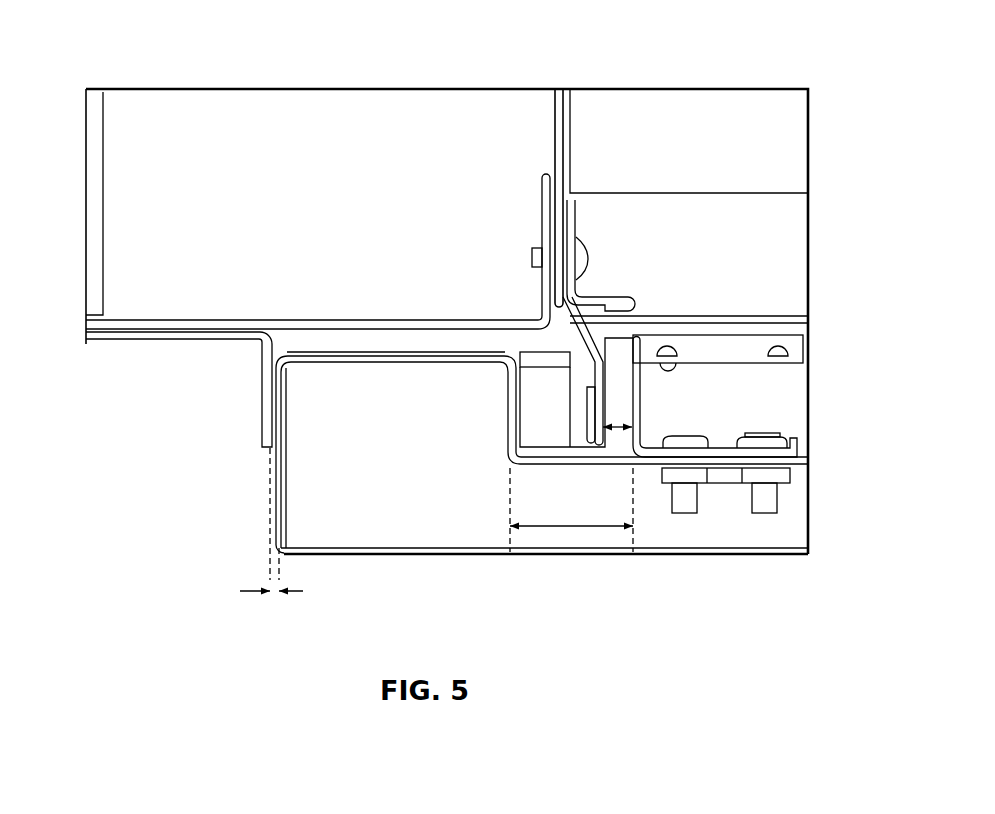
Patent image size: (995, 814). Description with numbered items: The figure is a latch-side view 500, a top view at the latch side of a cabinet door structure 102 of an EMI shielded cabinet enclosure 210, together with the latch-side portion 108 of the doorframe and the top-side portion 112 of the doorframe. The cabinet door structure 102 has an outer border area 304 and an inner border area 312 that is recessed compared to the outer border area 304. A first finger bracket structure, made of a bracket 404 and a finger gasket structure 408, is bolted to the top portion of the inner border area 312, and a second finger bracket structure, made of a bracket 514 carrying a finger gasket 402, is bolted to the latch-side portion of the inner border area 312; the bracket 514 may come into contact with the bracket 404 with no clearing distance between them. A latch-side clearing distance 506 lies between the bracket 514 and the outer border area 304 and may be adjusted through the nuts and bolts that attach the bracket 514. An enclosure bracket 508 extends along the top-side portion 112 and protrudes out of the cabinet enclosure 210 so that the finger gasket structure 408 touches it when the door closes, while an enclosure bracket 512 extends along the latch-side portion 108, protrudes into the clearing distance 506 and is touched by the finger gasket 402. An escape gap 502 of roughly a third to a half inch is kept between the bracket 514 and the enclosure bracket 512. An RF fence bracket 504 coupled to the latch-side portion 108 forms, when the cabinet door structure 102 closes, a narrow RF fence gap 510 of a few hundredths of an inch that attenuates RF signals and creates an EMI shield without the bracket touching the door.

The latch-side view 500 is at (698, 38).
The latch-side portion of doorframe 108 is at (316, 213).
The cabinet enclosure 210 is at (739, 177).
The top-side portion of doorframe 112 is at (739, 242).
The enclosure bracket 508 is at (617, 368).
The finger gasket structure 408 is at (722, 347).
The RF fence bracket 504 is at (261, 367).
The outer border area 304 is at (394, 462).
The enclosure bracket 512 is at (588, 400).
The bracket 514 is at (640, 403).
The bracket 404 is at (773, 423).
The finger gasket 402 is at (577, 445).
The escape gap 502 is at (618, 432).
The inner border area 312 is at (744, 548).
The latch-side clearing distance 506 is at (570, 527).
The cabinet door structure 102 is at (552, 556).
The RF fence gap 510 is at (288, 591).